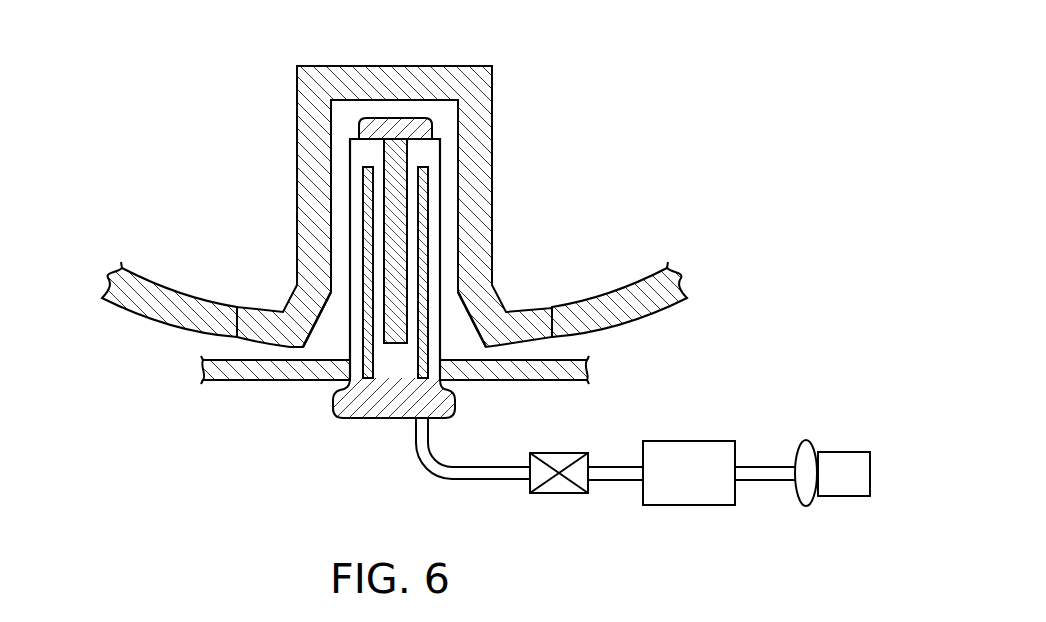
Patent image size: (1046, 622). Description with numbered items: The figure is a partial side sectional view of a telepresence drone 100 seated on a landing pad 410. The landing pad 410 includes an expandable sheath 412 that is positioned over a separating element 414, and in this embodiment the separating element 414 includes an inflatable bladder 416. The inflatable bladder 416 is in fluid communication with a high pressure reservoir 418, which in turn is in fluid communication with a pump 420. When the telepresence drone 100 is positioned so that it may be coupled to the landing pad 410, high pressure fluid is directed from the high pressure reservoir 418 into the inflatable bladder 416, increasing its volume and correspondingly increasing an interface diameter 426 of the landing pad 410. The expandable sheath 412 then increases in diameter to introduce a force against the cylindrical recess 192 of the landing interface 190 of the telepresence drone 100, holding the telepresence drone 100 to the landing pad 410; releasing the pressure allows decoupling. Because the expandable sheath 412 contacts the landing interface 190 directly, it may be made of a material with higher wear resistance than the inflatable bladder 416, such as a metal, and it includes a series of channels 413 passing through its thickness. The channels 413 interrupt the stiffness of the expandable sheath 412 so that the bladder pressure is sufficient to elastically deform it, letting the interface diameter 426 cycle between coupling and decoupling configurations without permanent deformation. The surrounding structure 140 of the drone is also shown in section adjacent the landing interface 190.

The telepresence drone 100 is at (703, 118).
The combustor liner 140 is at (627, 283).
The landing interface 190 is at (494, 218).
The cylindrical recess 192 is at (460, 110).
The landing pad 410 is at (235, 392).
The expandable sheath 412 is at (450, 183).
The channels 413 is at (333, 292).
The separating element 414 is at (358, 115).
The inflatable bladder 416 is at (385, 418).
The high pressure reservoir 418 is at (688, 505).
The pump 420 is at (840, 497).
The interface diameter 426 is at (330, 200).